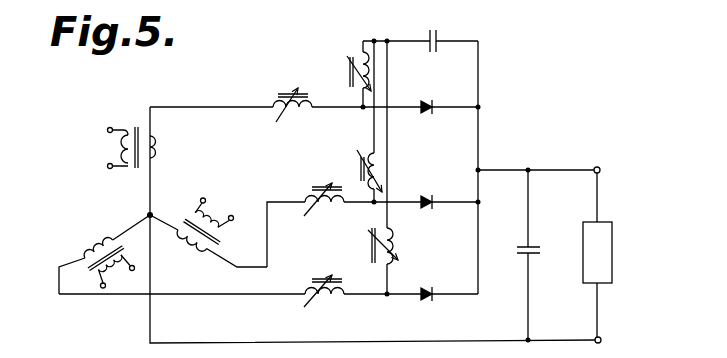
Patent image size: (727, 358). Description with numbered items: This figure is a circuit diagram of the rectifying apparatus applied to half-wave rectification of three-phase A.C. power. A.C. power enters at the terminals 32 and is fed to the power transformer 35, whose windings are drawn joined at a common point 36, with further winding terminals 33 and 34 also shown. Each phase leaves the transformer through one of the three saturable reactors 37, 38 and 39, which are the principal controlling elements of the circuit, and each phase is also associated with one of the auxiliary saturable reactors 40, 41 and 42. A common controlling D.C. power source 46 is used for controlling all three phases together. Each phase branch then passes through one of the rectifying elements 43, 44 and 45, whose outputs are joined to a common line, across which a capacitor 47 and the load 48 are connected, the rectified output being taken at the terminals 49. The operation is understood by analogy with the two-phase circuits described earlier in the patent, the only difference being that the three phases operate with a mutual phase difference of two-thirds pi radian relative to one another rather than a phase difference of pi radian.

The input terminals 32 is at (100, 147).
The secondary output terminals 33 is at (126, 279).
The secondary output terminals 34 is at (222, 198).
The power transformer 35 is at (194, 216).
The common junction 36 is at (149, 214).
The saturable reactor 37 is at (292, 94).
The saturable reactor 38 is at (319, 196).
The saturable reactor 39 is at (320, 284).
The auxiliary saturable reactor 40 is at (348, 60).
The auxiliary saturable reactor 41 is at (360, 156).
The auxiliary saturable reactor 42 is at (370, 244).
The rectifier diode 43 is at (435, 98).
The rectifier diode 44 is at (436, 196).
The rectifier diode 45 is at (433, 286).
The common controlling D.C. power source 46 is at (430, 33).
The filter capacitor 47 is at (519, 251).
The load resistor 48 is at (613, 245).
The output terminals 49 is at (609, 247).